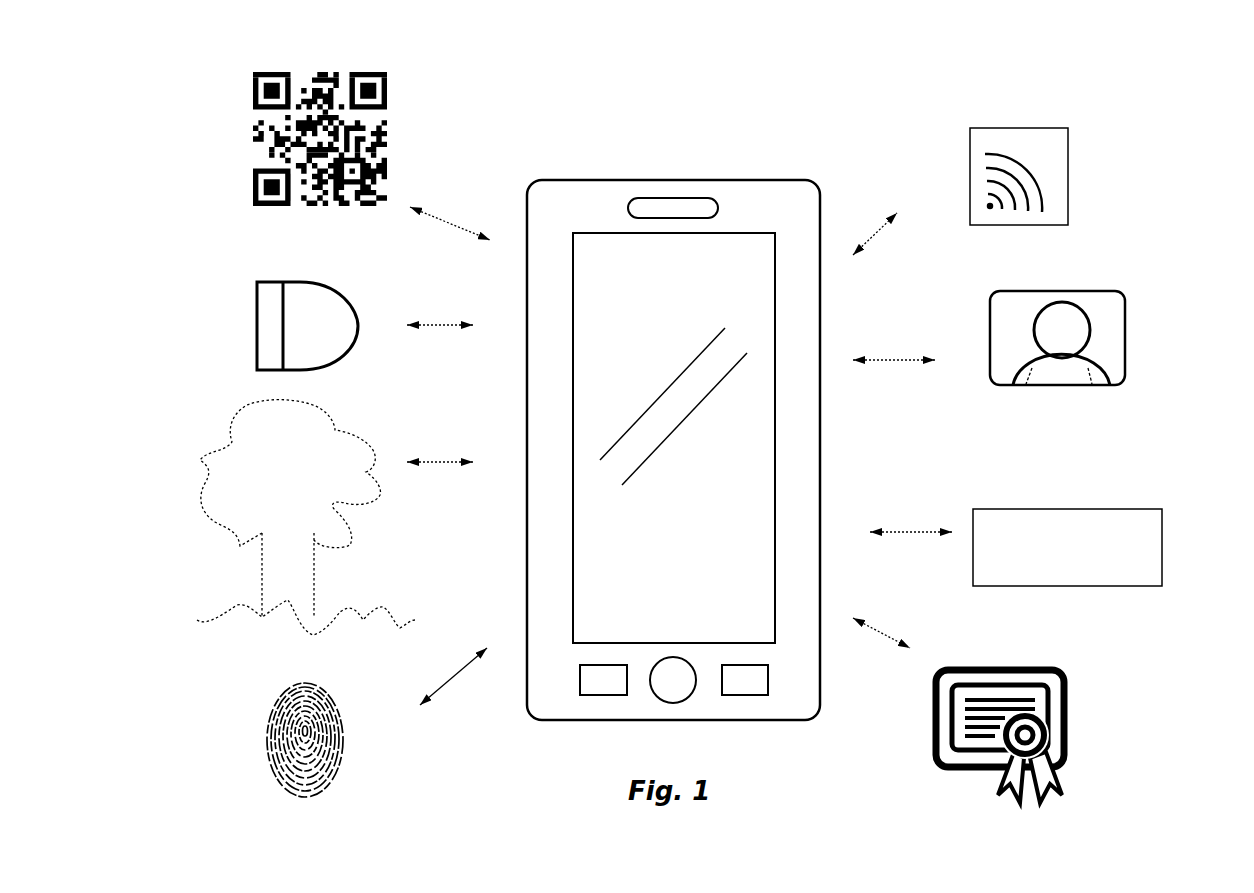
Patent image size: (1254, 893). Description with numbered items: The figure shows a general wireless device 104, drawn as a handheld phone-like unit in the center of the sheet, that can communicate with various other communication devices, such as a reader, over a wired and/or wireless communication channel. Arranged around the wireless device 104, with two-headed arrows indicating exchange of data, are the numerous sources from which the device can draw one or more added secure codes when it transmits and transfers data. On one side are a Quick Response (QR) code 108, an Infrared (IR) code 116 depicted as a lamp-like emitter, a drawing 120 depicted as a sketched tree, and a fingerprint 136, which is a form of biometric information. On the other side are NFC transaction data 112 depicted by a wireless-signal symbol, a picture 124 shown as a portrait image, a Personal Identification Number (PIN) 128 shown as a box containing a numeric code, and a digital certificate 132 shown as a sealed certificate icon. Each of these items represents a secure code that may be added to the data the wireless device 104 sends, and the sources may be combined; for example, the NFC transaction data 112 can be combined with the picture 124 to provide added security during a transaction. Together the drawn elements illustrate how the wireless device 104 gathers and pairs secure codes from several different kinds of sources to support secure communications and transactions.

The wireless device 104 is at (725, 180).
The Quick Response (QR) code 108 is at (235, 120).
The NFC transaction data 112 is at (1069, 177).
The Infrared (IR) code 116 is at (257, 327).
The drawing 120 is at (208, 478).
The picture 124 is at (1125, 338).
The Personal Identification Number (PIN) 128 is at (1162, 547).
The digital certificate 132 is at (1070, 708).
The fingerprint 136 is at (237, 740).